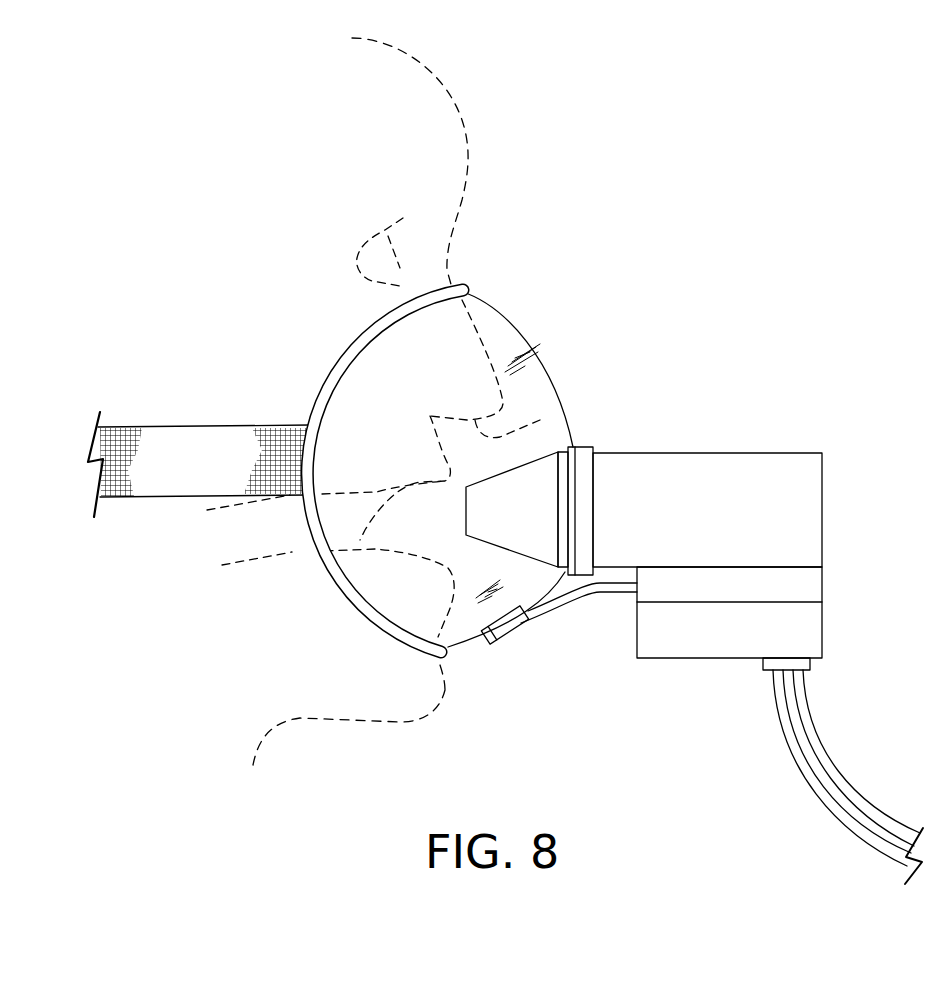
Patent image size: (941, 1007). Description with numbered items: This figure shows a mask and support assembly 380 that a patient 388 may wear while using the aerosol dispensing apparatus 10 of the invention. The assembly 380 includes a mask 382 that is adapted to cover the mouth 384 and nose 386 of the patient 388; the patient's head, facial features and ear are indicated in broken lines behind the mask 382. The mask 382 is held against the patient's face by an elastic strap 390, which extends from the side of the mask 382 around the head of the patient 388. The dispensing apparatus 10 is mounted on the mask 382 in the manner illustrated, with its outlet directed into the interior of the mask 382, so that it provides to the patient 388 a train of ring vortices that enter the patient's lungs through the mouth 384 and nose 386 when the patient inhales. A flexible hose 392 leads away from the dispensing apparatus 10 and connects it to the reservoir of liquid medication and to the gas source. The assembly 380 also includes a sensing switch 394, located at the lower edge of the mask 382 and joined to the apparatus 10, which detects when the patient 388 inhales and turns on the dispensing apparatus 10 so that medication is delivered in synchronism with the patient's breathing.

The aerosol dispensing apparatus 10 is at (707, 533).
The mask and support assembly 380 is at (684, 368).
The mask 382 is at (505, 322).
The mouth 384 is at (363, 538).
The nose 386 is at (540, 420).
The patient 388 is at (462, 138).
The elastic strap 390 is at (191, 432).
The flexible hose 392 is at (823, 760).
The sensing switch 394 is at (487, 640).